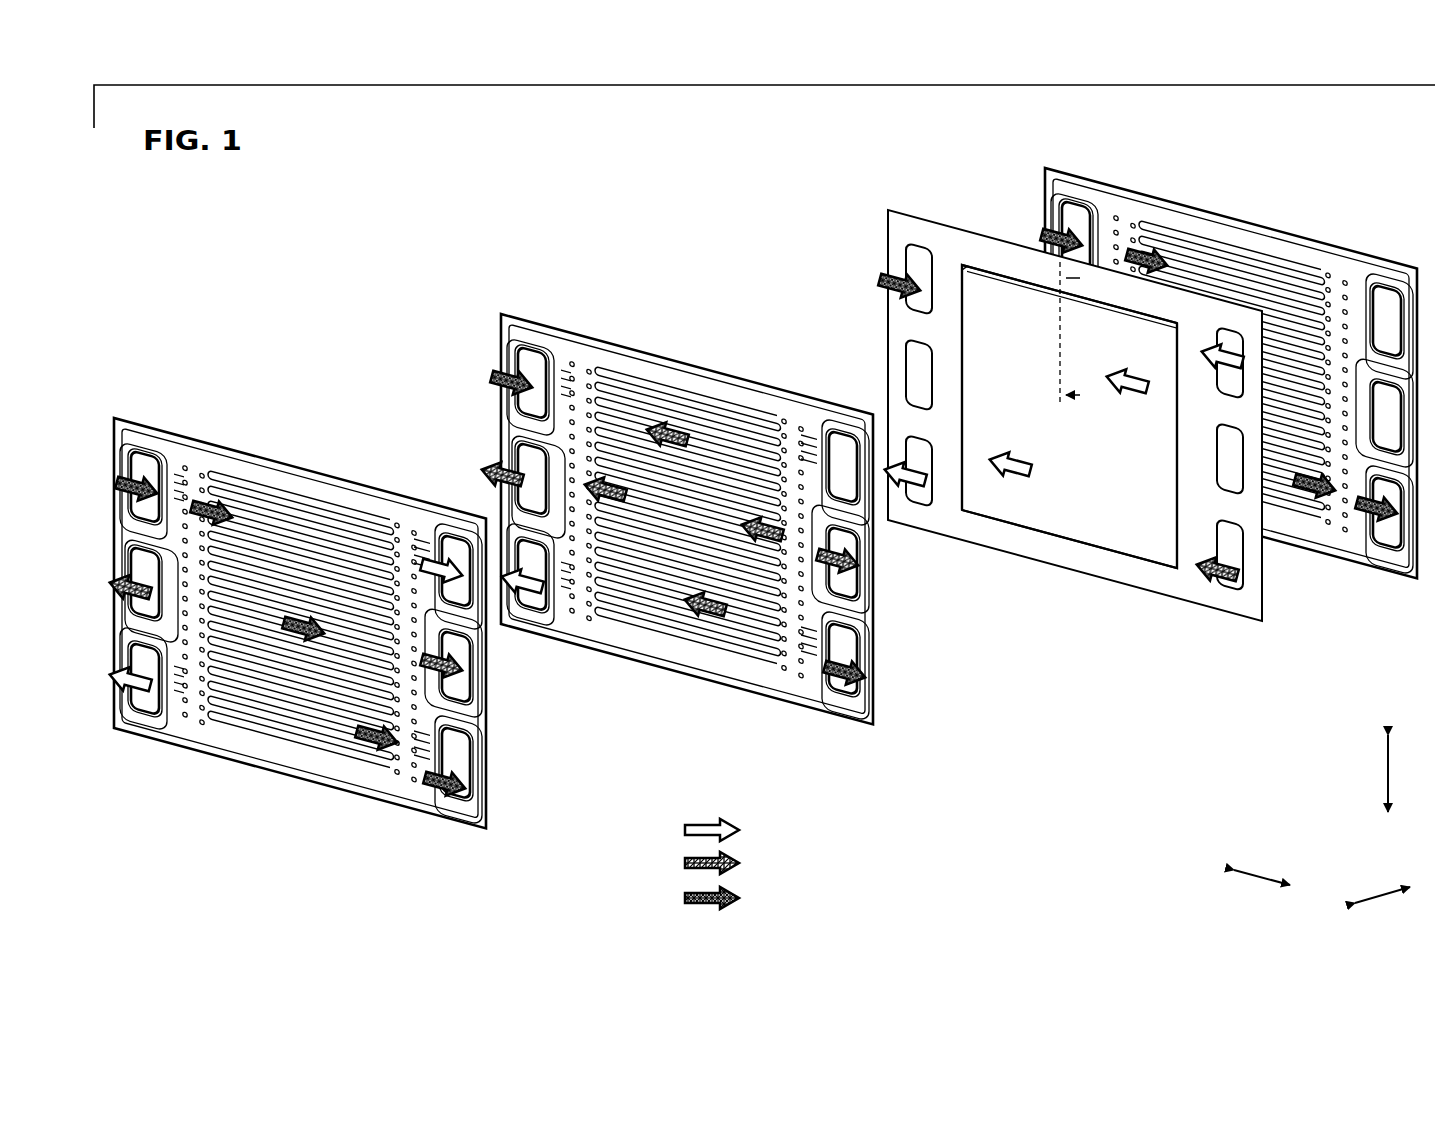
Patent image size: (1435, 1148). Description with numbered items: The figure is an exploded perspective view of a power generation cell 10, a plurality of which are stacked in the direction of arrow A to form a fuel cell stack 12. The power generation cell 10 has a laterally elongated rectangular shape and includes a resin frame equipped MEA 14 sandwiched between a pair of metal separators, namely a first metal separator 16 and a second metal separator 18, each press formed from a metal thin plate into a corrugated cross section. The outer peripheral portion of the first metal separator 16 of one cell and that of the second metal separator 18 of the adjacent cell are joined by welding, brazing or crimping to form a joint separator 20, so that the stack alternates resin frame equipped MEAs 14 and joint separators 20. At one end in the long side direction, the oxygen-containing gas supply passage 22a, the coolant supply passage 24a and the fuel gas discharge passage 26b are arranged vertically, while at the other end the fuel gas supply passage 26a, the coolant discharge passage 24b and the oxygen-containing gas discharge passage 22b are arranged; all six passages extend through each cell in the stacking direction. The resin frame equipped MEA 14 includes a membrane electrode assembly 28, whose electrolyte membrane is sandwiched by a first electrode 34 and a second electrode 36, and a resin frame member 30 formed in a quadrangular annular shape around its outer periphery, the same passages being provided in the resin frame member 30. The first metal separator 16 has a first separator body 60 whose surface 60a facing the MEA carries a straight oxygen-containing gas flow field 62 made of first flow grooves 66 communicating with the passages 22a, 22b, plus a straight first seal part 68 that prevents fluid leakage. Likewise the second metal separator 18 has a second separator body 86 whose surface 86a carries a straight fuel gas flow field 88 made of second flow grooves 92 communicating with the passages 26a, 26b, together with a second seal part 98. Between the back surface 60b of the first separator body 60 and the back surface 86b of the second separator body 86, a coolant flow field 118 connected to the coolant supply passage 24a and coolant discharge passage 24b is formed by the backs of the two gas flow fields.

The power generation cell 10 is at (755, 243).
The fuel cell stack 12 is at (424, 196).
The resin frame equipped MEA 14 is at (818, 193).
The first metal separator 16 is at (502, 313).
The second metal separator 18 is at (138, 417).
The joint separator 20 is at (978, 115).
The oxygen-containing gas supply passage 22a is at (448, 540).
The oxygen-containing gas discharge passage 22b is at (140, 705).
The coolant supply passage 24a is at (465, 668).
The coolant discharge passage 24b is at (150, 595).
The fuel gas supply passage 26a is at (150, 462).
The fuel gas discharge passage 26b is at (458, 773).
The membrane electrode assembly 28 is at (958, 263).
The resin frame member 30 is at (895, 250).
The first electrode 34 is at (1142, 538).
The second electrode 36 is at (1080, 522).
The first separator body 60 is at (688, 475).
The surface of first separator body 60a is at (640, 652).
The back surface of first separator body 60b is at (610, 648).
The oxygen-containing gas flow field 62 is at (688, 475).
The first flow grooves 66 is at (610, 385).
The first seal part 68 is at (568, 330).
The second separator body 86 is at (762, 457).
The surface of second separator body 86a is at (268, 760).
The back surface of second separator body 86b is at (295, 762).
The fuel gas flow field 88 is at (762, 457).
The second flow grooves 92 is at (243, 490).
The second seal part 98 is at (372, 782).
The coolant flow field 118 is at (700, 636).